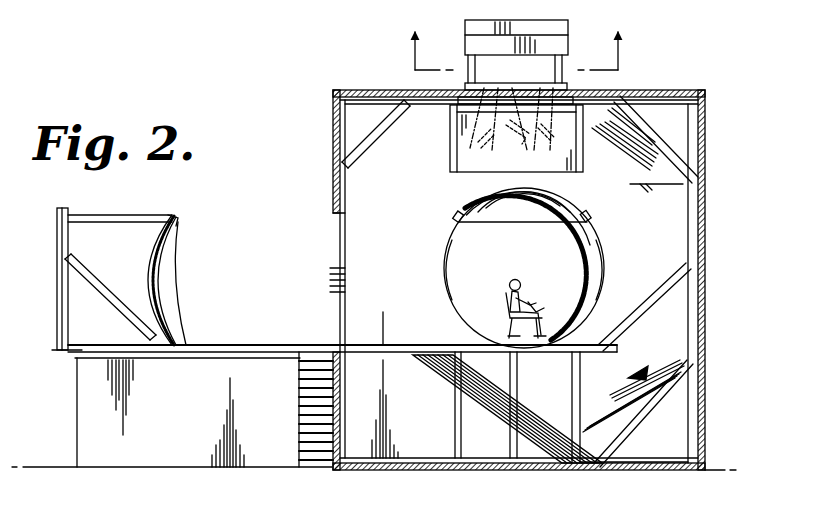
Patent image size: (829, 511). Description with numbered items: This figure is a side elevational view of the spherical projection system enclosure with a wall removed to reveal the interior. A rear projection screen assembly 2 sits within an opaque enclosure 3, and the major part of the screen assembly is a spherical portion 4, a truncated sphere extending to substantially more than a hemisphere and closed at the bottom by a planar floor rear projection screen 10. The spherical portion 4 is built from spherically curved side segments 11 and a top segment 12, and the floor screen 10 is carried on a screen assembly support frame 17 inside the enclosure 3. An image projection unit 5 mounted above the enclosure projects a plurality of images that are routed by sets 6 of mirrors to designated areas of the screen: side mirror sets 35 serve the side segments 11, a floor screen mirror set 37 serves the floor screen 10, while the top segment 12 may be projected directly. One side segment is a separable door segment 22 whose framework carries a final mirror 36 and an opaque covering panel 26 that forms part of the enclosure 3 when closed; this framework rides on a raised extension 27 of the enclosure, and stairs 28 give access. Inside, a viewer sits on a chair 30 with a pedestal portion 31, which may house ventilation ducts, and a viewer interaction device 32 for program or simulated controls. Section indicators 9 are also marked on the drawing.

The rear projection screen assembly 2 is at (608, 288).
The opaque enclosure 3 is at (706, 92).
The spherical portion 4 is at (601, 241).
The image projection unit 5 is at (564, 21).
The sets of mirrors 6 is at (663, 187).
The section line 9- 9 is at (519, 54).
The planar floor rear projection screen 10 is at (460, 346).
The side segments 11 is at (458, 248).
The top segment 12 is at (530, 224).
The screen assembly support frame 17 is at (571, 378).
The door segment 22 is at (175, 287).
The opaque covering panel 26 is at (57, 285).
The raised extension 27 is at (82, 430).
The stairs 28 is at (299, 407).
The chair 30 is at (508, 296).
The pedestal portion 31 is at (505, 329).
The viewer interaction device 32 is at (536, 312).
The side mirror sets 35 is at (361, 150).
The final mirror 36 is at (98, 283).
The floor screen mirror set 37 is at (516, 143).